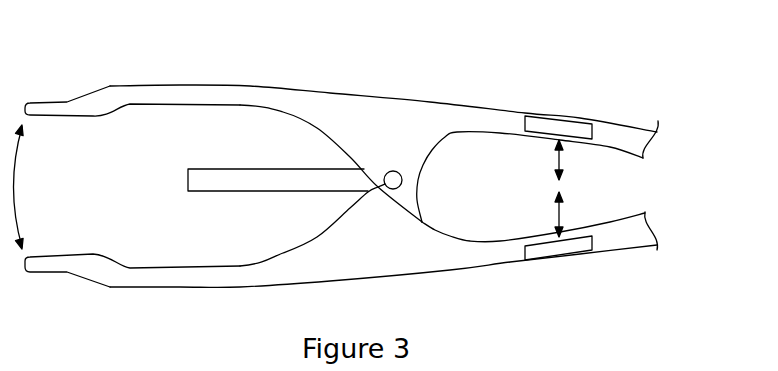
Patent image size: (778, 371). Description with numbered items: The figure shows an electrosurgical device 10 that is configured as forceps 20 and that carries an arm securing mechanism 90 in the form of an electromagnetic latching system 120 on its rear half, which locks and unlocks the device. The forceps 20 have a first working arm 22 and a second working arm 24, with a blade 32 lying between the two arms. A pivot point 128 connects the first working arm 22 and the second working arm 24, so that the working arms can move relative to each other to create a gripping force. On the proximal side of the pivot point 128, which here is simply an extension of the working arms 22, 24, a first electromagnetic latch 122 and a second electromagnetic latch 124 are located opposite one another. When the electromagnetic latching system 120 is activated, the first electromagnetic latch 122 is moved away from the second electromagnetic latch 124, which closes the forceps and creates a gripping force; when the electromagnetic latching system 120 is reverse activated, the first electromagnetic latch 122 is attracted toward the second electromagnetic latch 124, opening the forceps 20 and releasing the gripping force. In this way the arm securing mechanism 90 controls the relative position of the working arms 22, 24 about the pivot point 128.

The electrosurgical device 10 is at (382, 178).
The forceps 20 is at (537, 62).
The first working arm 22 is at (148, 95).
The second working arm 24 is at (147, 286).
The blade 32 is at (215, 176).
The arm securing mechanism 90 is at (583, 180).
The electromagnetic latching system 120 is at (608, 105).
The first electromagnetic latch 122 is at (533, 122).
The second electromagnetic latch 124 is at (562, 246).
The pivot point 128 is at (397, 179).